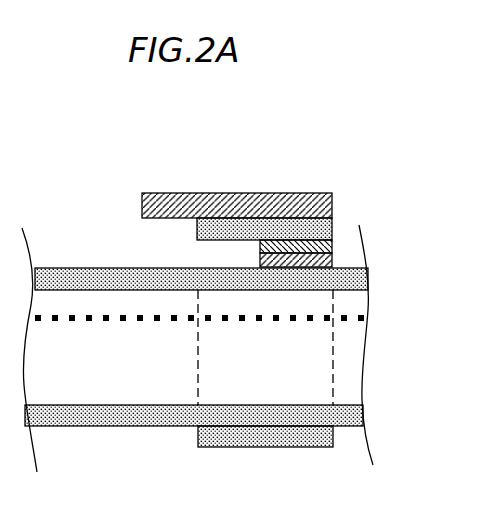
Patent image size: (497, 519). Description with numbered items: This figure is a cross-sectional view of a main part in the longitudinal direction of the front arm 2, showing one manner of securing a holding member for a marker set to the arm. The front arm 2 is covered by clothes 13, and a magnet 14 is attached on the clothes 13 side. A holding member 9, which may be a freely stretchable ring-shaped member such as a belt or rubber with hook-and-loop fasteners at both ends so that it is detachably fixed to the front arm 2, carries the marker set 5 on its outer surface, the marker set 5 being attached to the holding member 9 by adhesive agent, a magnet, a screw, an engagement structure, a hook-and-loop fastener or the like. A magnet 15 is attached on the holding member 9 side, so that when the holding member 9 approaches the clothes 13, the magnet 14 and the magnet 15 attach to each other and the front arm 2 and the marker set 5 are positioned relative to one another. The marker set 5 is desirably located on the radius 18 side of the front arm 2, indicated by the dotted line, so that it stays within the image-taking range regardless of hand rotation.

The front arm 2 is at (74, 394).
The marker set 5 is at (226, 193).
The holding member 9 is at (333, 224).
The clothes 13 is at (50, 268).
The magnet 14 is at (340, 265).
The magnet 15 is at (338, 243).
The radius 18 is at (350, 323).